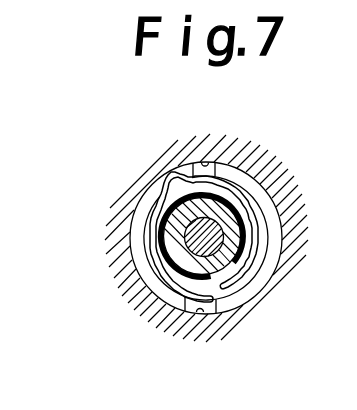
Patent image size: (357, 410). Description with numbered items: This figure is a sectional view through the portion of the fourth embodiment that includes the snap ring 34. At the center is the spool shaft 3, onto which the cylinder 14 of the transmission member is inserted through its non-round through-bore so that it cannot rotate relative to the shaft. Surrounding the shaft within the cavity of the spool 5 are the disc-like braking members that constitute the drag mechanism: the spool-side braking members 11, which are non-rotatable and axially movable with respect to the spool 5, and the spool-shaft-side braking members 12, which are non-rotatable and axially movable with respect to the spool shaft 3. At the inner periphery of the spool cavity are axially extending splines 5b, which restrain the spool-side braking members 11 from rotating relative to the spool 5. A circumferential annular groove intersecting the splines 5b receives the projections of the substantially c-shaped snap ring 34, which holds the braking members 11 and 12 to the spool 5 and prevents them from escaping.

The spool 5 is at (262, 161).
The splines 5b is at (201, 315).
The snap ring 34 is at (253, 210).
The cylinder 14 is at (233, 237).
The spool shaft 3 is at (216, 252).
The spool-shaft-side braking members 12 is at (233, 283).
The spool-side braking members 11 is at (186, 303).